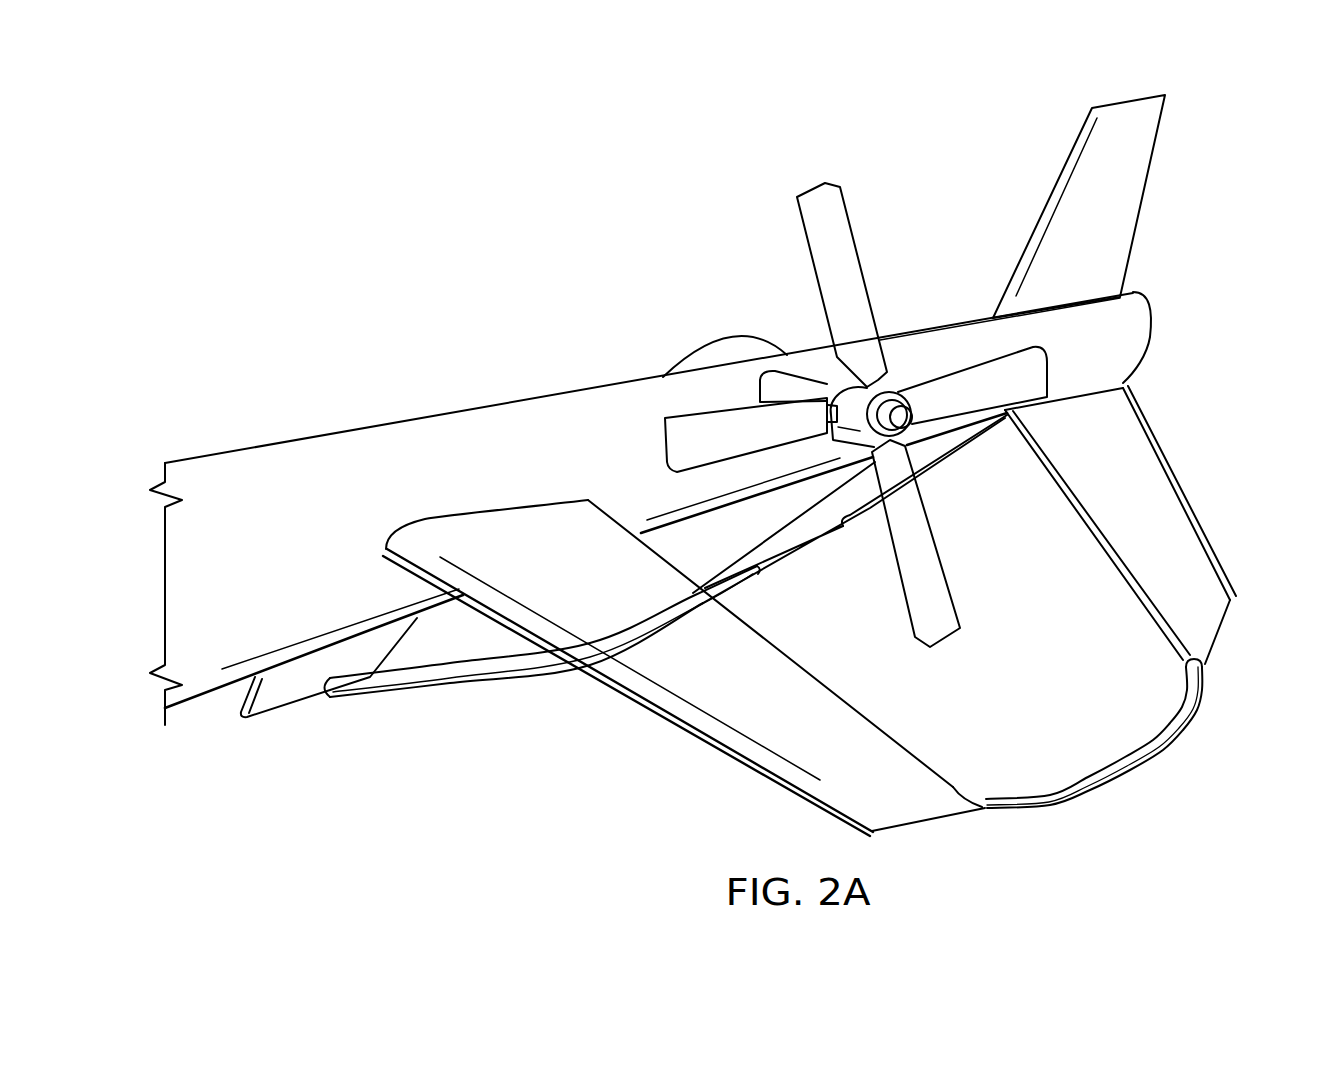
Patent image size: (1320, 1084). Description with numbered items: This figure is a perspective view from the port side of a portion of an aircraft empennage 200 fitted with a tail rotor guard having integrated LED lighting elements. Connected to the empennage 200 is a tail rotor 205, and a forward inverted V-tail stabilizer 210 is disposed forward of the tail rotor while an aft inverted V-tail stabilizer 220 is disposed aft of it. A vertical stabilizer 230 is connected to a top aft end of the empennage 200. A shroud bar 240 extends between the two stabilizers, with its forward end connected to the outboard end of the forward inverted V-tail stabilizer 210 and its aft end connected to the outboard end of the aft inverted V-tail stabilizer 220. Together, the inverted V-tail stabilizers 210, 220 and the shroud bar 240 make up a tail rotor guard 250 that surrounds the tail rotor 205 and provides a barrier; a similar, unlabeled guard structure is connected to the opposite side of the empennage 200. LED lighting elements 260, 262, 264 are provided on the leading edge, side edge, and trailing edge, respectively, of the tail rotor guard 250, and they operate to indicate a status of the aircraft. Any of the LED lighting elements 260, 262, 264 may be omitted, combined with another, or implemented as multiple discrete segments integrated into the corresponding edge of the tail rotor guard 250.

The empennage 200 is at (463, 312).
The tail rotor 205 is at (898, 316).
The forward inverted V-tail stabilizer 210 is at (693, 686).
The aft inverted V-tail stabilizer 220 is at (1157, 513).
The vertical stabilizer 230 is at (1132, 181).
The shroud bar 240 is at (1047, 782).
The tail rotor guard (TRG) 250 is at (656, 770).
The LED lighting element 260 is at (798, 790).
The LED lighting element 262 is at (1137, 773).
The LED lighting element 264 is at (1148, 422).